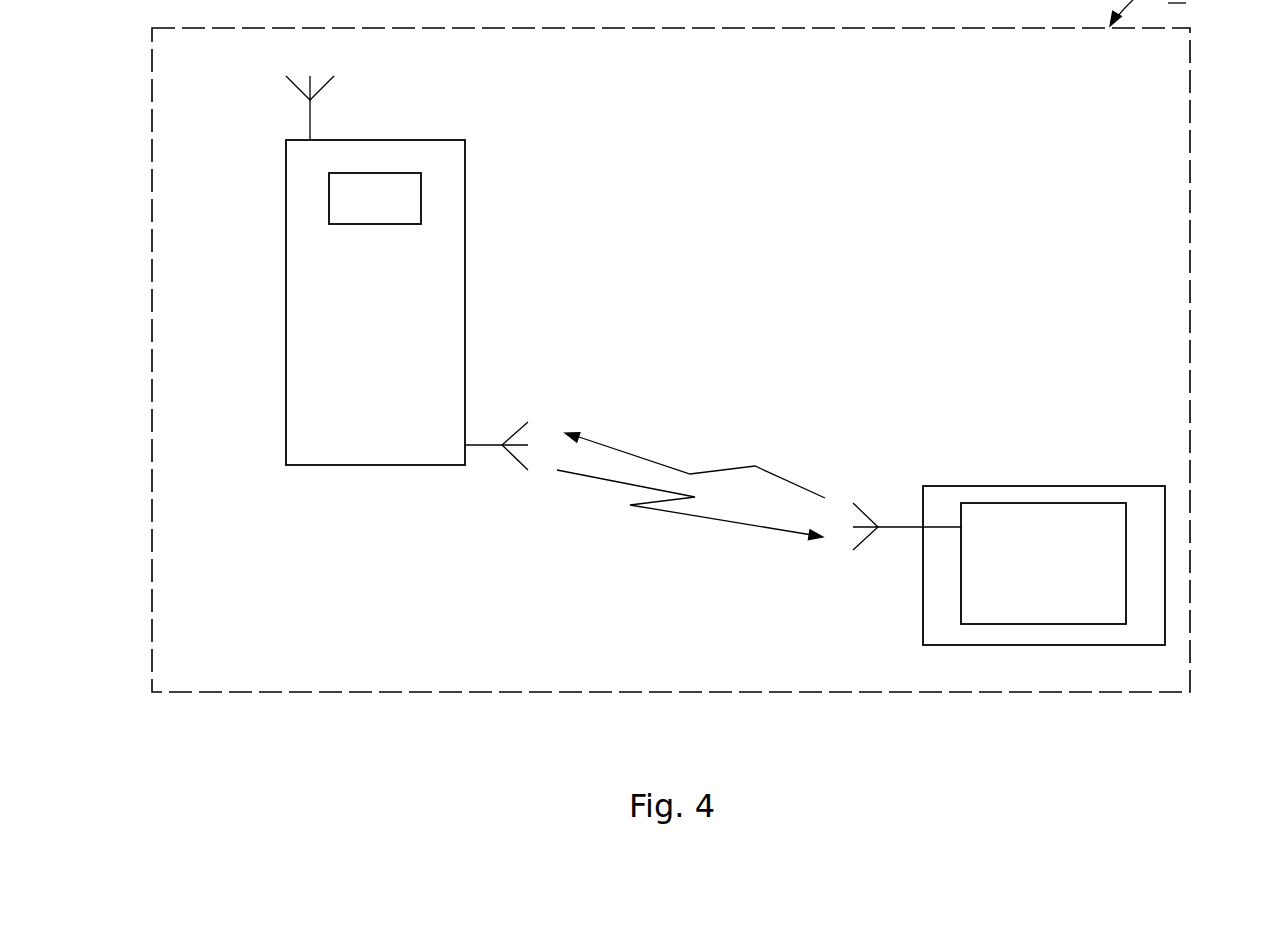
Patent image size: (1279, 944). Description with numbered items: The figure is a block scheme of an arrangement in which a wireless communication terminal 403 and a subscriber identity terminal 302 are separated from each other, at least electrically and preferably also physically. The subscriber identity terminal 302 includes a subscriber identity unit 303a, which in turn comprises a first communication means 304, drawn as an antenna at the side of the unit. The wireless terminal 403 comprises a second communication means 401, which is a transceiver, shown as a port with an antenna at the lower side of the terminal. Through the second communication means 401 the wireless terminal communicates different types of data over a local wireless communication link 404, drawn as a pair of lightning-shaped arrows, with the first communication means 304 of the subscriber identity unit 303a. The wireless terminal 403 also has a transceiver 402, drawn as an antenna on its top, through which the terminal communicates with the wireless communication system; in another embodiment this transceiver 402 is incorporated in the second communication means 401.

The subscriber identity terminal 302 is at (1089, 565).
The subscriber identity unit 303a is at (1049, 524).
The first communication means 304 is at (906, 559).
The second communication means 401 is at (489, 447).
The transceiver 402 is at (310, 122).
The wireless communication terminal 403 is at (336, 302).
The local wireless communication link 404 is at (691, 515).